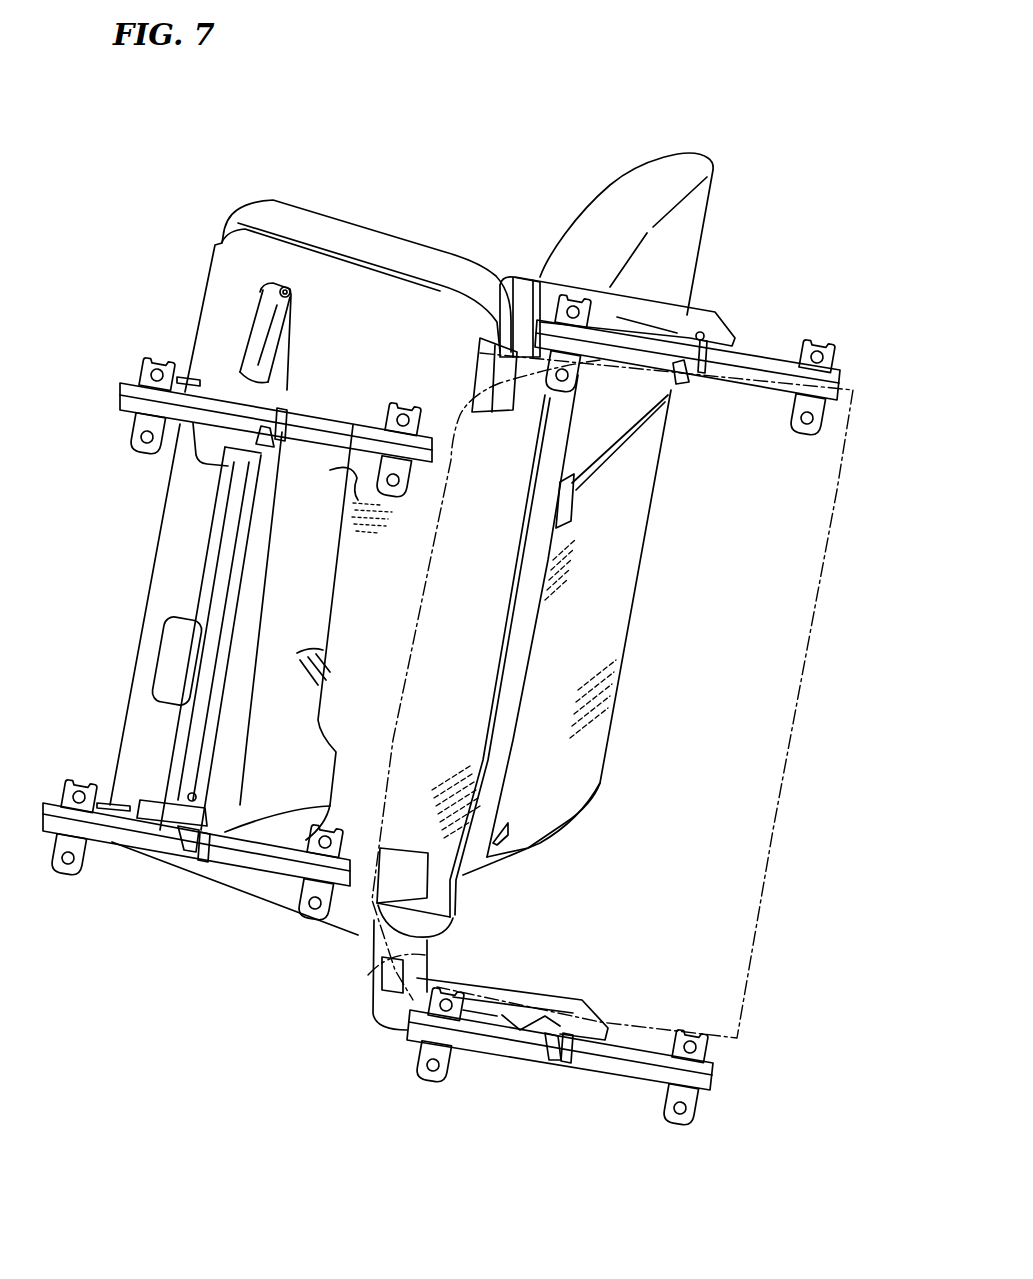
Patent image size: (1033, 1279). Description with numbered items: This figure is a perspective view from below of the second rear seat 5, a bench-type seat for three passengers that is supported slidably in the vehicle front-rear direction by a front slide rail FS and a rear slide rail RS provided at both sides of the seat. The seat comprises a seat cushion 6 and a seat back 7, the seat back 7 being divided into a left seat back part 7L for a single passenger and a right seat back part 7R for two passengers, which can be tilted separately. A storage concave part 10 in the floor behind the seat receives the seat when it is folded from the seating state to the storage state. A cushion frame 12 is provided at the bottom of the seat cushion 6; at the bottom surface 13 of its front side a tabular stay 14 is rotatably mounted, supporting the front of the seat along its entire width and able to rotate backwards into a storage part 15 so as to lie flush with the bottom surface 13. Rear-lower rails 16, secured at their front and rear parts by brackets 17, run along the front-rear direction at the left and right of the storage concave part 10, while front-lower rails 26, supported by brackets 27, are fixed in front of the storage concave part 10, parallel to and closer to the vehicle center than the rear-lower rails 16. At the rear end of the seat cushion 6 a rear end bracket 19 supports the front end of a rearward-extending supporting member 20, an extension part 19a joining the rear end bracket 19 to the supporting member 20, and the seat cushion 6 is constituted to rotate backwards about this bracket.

The second rear seat 5 is at (838, 273).
The seat cushion 6 is at (353, 222).
The seat back 7 is at (619, 180).
The left seat back part 7L is at (712, 198).
The right seat back part 7R is at (628, 580).
The storage concave part 10 is at (780, 735).
The cushion frame 12 is at (433, 315).
The bottom surface 13 is at (337, 704).
The stay 14 is at (213, 523).
The storage part 15 is at (353, 362).
The rear-lower rails 16 is at (760, 358).
The brackets 17 is at (573, 302).
The rear end bracket 19 is at (398, 915).
The extension part 19a is at (508, 337).
The supporting member 20 is at (675, 310).
The front-lower rails 26 is at (120, 397).
The brackets 27 is at (393, 410).
The front slide rail FS is at (178, 342).
The rear slide rail RS is at (735, 298).